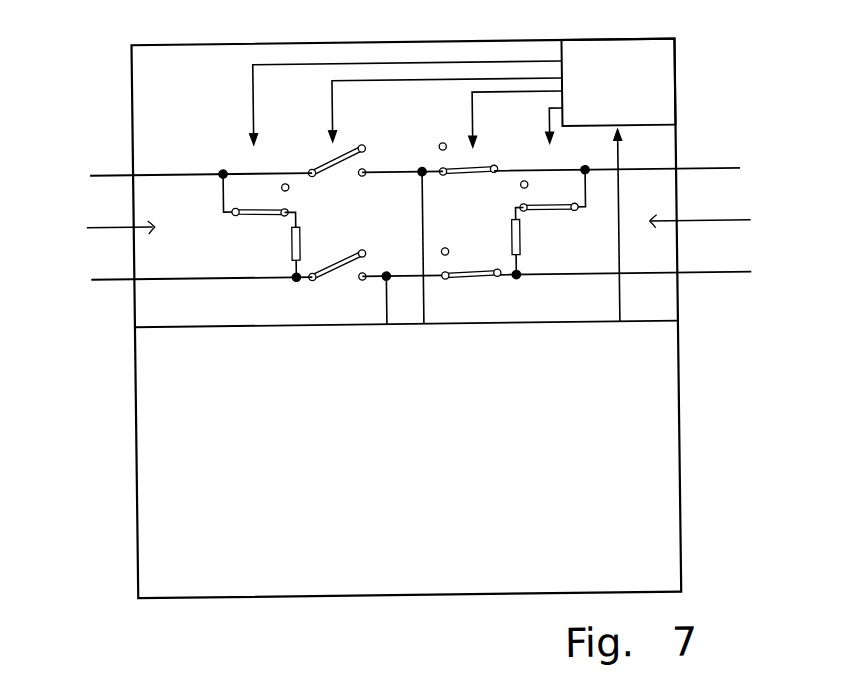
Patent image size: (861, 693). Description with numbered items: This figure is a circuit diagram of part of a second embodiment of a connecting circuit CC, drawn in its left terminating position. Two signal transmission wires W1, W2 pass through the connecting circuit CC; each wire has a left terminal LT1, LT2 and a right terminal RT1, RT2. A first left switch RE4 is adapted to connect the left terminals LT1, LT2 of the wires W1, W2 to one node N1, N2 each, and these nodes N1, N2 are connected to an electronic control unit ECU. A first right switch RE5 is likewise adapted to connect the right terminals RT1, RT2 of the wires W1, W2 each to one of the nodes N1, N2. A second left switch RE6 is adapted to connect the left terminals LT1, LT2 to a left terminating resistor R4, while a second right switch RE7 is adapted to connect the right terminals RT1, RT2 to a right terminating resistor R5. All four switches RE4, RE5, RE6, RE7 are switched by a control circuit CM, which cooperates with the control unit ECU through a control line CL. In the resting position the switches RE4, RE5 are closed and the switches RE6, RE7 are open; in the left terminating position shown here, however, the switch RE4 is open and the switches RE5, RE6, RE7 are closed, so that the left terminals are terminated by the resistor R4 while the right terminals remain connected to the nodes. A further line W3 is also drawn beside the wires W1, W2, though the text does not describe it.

The connecting circuit CC is at (196, 81).
The electronic control unit ECU is at (226, 367).
The control circuit CM is at (618, 82).
The first left switch RE4 is at (423, 179).
The first right switch RE5 is at (492, 133).
The second left switch RE6 is at (382, 103).
The second right switch RE7 is at (531, 125).
The control line CL is at (619, 240).
The signal transmission wire W1 is at (770, 191).
The signal transmission wire W2 is at (768, 298).
The third wire W3 is at (779, 245).
The node N1 is at (419, 178).
The node N2 is at (383, 283).
The left terminal LT1 is at (222, 180).
The left terminal LT2 is at (294, 281).
The right terminal RT1 is at (584, 179).
The right terminal RT2 is at (518, 283).
The left terminating resistor R4 is at (280, 244).
The right terminating resistor R5 is at (500, 241).